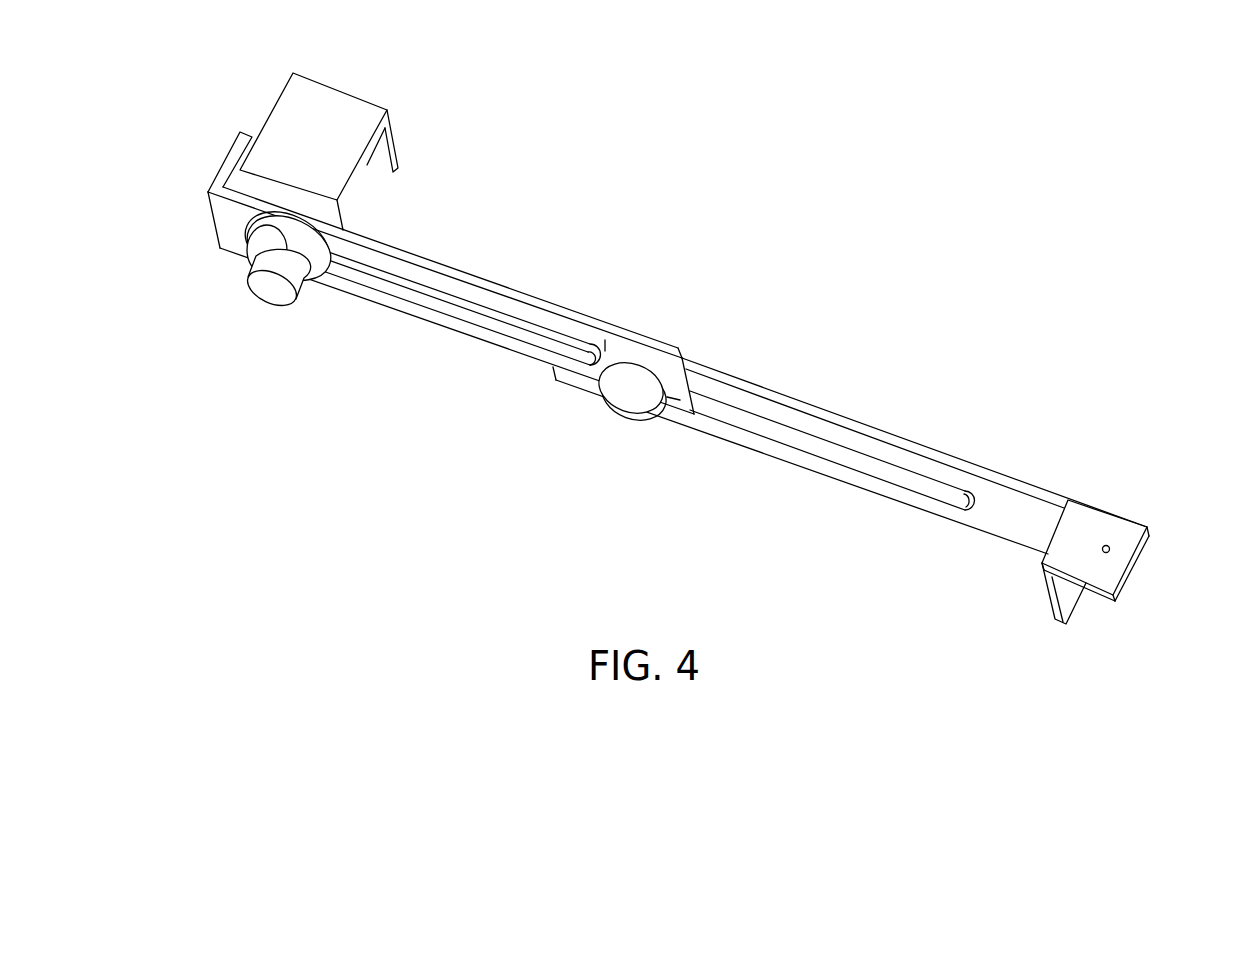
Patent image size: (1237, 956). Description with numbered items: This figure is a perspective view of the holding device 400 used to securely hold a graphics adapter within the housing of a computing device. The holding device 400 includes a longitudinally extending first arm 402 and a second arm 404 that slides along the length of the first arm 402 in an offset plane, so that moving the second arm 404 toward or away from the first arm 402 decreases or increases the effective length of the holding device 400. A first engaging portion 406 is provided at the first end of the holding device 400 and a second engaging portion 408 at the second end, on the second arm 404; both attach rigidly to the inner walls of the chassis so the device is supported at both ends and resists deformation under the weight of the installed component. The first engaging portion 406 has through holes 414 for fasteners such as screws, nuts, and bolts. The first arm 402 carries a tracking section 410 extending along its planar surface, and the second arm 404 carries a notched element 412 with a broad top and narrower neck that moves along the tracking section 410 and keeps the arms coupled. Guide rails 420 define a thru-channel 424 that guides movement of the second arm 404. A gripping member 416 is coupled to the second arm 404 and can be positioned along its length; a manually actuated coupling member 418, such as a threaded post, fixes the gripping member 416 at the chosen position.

The holding device 400 is at (668, 342).
The first arm 402 is at (850, 440).
The second arm 404 is at (451, 300).
The first engaging portion 406 is at (1129, 545).
The second engaging portion 408 is at (224, 157).
The tracking section 410 is at (729, 411).
The notched element 412 is at (631, 398).
The through holes 414 is at (1106, 545).
The gripping member 416 is at (342, 90).
The coupling member 418 is at (266, 290).
The guide rails 420 is at (548, 311).
The thru-channel 424 is at (381, 298).